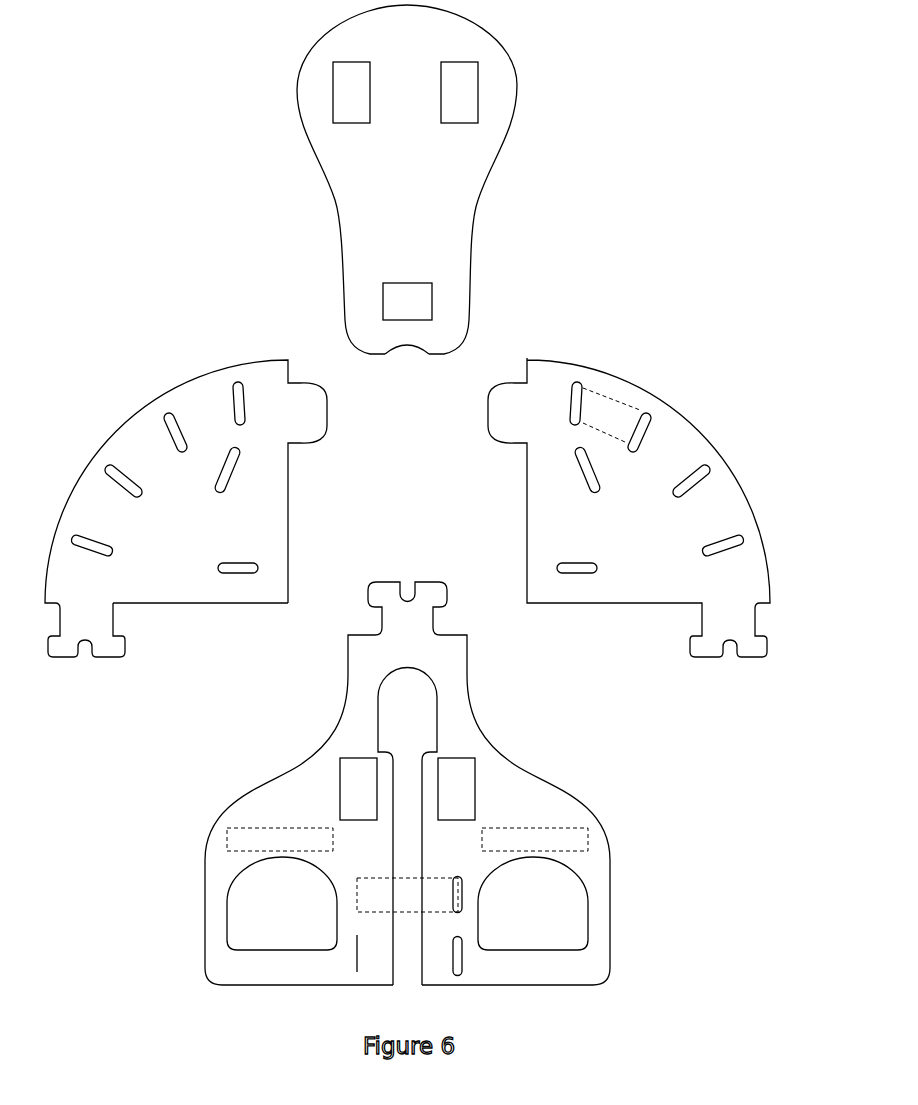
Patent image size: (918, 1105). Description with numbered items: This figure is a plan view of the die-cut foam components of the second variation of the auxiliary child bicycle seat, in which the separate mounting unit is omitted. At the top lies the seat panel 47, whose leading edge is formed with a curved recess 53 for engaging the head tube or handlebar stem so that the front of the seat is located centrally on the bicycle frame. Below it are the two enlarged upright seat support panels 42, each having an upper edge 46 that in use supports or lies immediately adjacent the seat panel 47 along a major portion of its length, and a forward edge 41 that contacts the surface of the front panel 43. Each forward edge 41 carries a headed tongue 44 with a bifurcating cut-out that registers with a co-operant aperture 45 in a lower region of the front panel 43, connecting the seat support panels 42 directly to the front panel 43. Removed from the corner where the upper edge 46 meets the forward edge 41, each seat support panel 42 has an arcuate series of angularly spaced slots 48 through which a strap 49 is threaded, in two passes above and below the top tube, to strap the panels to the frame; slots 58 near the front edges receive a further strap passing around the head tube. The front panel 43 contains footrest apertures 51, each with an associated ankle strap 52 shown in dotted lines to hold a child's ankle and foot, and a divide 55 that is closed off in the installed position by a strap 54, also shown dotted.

The forward edge 41 is at (193, 603).
The upright seat support panel 42 is at (182, 535).
The front panel 43 is at (290, 802).
The headed tongue 44 is at (93, 615).
The co-operant aperture 45 is at (358, 787).
The upper edge 46 is at (527, 518).
The seat panel 47 is at (400, 175).
The angularly spaced slots 48 is at (122, 478).
The strap 49 is at (619, 404).
The footrest aperture 51 is at (278, 908).
The ankle strap 52 is at (253, 839).
The curved recess 53 is at (408, 350).
The strap 54 is at (382, 902).
The divide 55 is at (407, 861).
The slots 58 is at (578, 570).